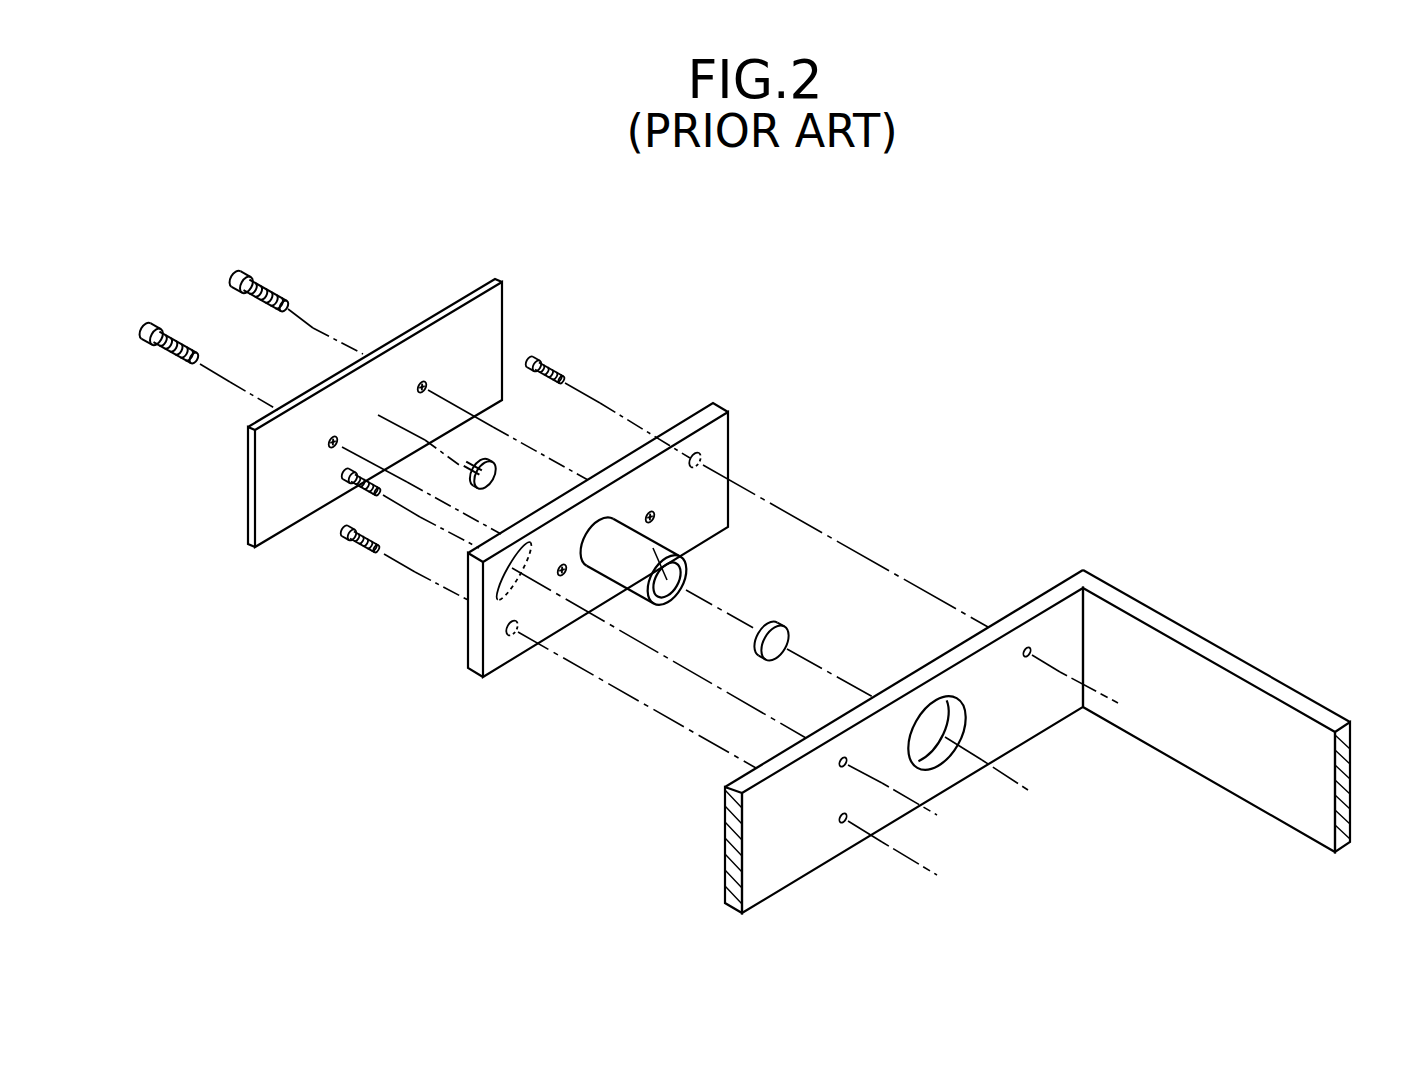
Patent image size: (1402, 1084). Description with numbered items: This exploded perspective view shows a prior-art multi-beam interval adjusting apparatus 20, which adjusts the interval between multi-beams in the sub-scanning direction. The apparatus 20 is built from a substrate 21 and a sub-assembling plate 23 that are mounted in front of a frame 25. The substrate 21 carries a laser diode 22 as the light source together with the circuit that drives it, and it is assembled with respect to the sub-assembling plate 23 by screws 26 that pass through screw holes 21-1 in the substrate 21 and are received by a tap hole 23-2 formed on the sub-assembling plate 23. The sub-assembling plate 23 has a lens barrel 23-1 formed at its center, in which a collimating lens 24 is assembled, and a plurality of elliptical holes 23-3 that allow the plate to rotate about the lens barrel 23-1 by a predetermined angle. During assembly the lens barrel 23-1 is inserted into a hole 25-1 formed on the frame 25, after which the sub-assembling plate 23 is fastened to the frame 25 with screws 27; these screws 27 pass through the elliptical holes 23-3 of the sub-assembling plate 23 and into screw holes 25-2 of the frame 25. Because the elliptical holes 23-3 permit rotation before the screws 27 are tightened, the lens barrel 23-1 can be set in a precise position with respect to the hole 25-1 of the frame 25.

The multi-beam interval adjusting apparatus 20 is at (995, 268).
The substrate 21 is at (268, 473).
The screw holes 21-1 is at (433, 391).
The laser diode 22 is at (500, 474).
The sub-assembling plate 23 is at (697, 425).
The lens barrel 23-1 is at (653, 550).
The tap hole 23-2 is at (662, 517).
The elliptical holes 23-3 is at (516, 634).
The collimating lens 24 is at (790, 630).
The frame 25 is at (1163, 625).
The hole 25-1 is at (931, 742).
The screw holes 25-2 is at (843, 823).
The screws 26 is at (146, 323).
The screws 27 is at (547, 367).